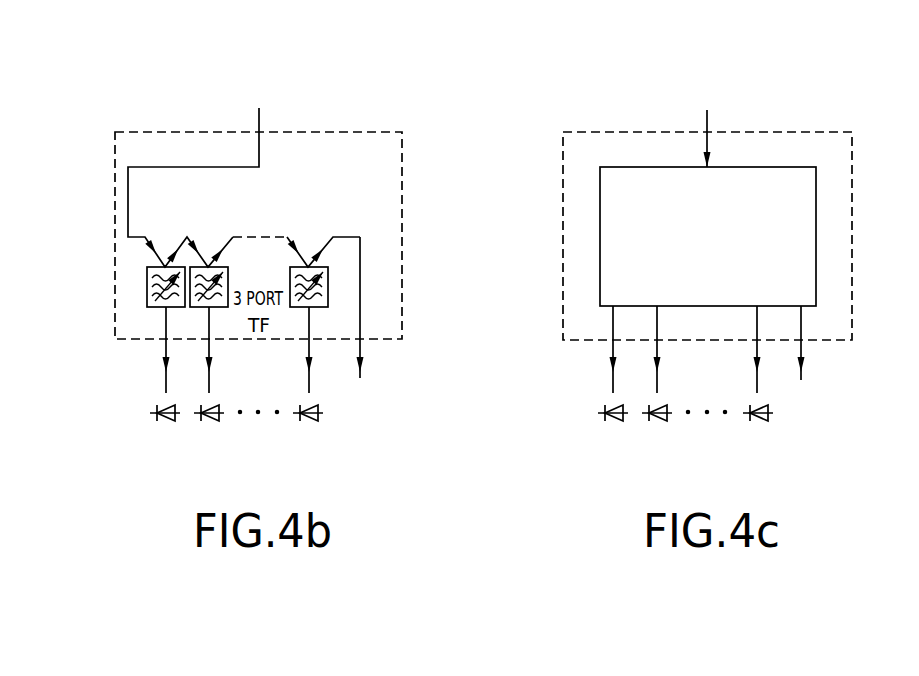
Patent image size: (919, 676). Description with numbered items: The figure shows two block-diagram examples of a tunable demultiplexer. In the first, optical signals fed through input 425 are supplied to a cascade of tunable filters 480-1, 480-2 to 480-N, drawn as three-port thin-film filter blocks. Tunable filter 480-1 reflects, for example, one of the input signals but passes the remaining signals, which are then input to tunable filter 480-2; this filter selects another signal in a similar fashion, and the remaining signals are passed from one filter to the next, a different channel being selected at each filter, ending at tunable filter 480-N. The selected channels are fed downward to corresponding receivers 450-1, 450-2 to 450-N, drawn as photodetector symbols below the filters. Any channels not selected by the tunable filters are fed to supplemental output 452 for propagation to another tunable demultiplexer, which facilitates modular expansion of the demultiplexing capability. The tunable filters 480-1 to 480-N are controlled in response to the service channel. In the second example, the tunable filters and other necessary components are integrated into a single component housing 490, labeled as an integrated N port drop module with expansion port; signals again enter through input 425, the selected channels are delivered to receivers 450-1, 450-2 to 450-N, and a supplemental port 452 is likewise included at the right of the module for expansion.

In FIG. 4b, the input 425 is at (257, 128).
In FIG. 4c, the input 425 is at (705, 128).
In FIG. 4b, the tunable filter 480-1 is at (147, 292).
In FIG. 4b, the tunable filter 480-2 is at (217, 307).
In FIG. 4b, the tunable filter 480-N is at (321, 307).
In FIG. 4b, the supplemental output 452 is at (362, 372).
In FIG. 4c, the supplemental output 452 is at (803, 375).
In FIG. 4b, the receiver 450-1 is at (170, 421).
In FIG. 4c, the receiver 450-1 is at (618, 422).
In FIG. 4b, the receiver 450-2 is at (210, 421).
In FIG. 4c, the receiver 450-2 is at (660, 422).
In FIG. 4b, the receiver 450-N is at (305, 421).
In FIG. 4c, the receiver 450-N is at (760, 422).
In FIG. 4c, the single component housing 490 is at (816, 207).